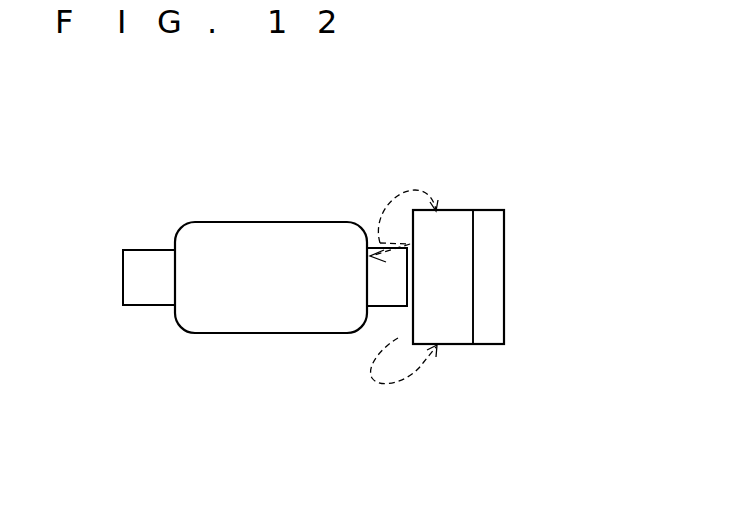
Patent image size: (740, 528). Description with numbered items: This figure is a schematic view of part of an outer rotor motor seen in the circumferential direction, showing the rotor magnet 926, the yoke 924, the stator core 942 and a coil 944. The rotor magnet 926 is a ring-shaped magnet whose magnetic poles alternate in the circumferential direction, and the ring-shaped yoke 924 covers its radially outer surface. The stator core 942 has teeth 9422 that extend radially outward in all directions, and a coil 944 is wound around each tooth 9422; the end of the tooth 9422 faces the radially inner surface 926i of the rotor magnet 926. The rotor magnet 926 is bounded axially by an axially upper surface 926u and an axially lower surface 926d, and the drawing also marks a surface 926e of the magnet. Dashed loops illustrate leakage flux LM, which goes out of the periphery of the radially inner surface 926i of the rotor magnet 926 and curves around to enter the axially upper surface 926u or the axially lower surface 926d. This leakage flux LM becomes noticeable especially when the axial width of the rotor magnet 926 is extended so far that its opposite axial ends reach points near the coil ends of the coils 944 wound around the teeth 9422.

The stator core 942 is at (147, 262).
The teeth 9422 is at (153, 293).
The coil 944 is at (228, 320).
The rotor magnet 926 is at (453, 228).
The radially inner surface 926i is at (410, 323).
The axially upper surface 926u is at (467, 210).
The axially lower surface 926d is at (460, 345).
The emission surface 926e is at (475, 245).
The yoke 924 is at (495, 293).
The leakage flux LM is at (393, 202).